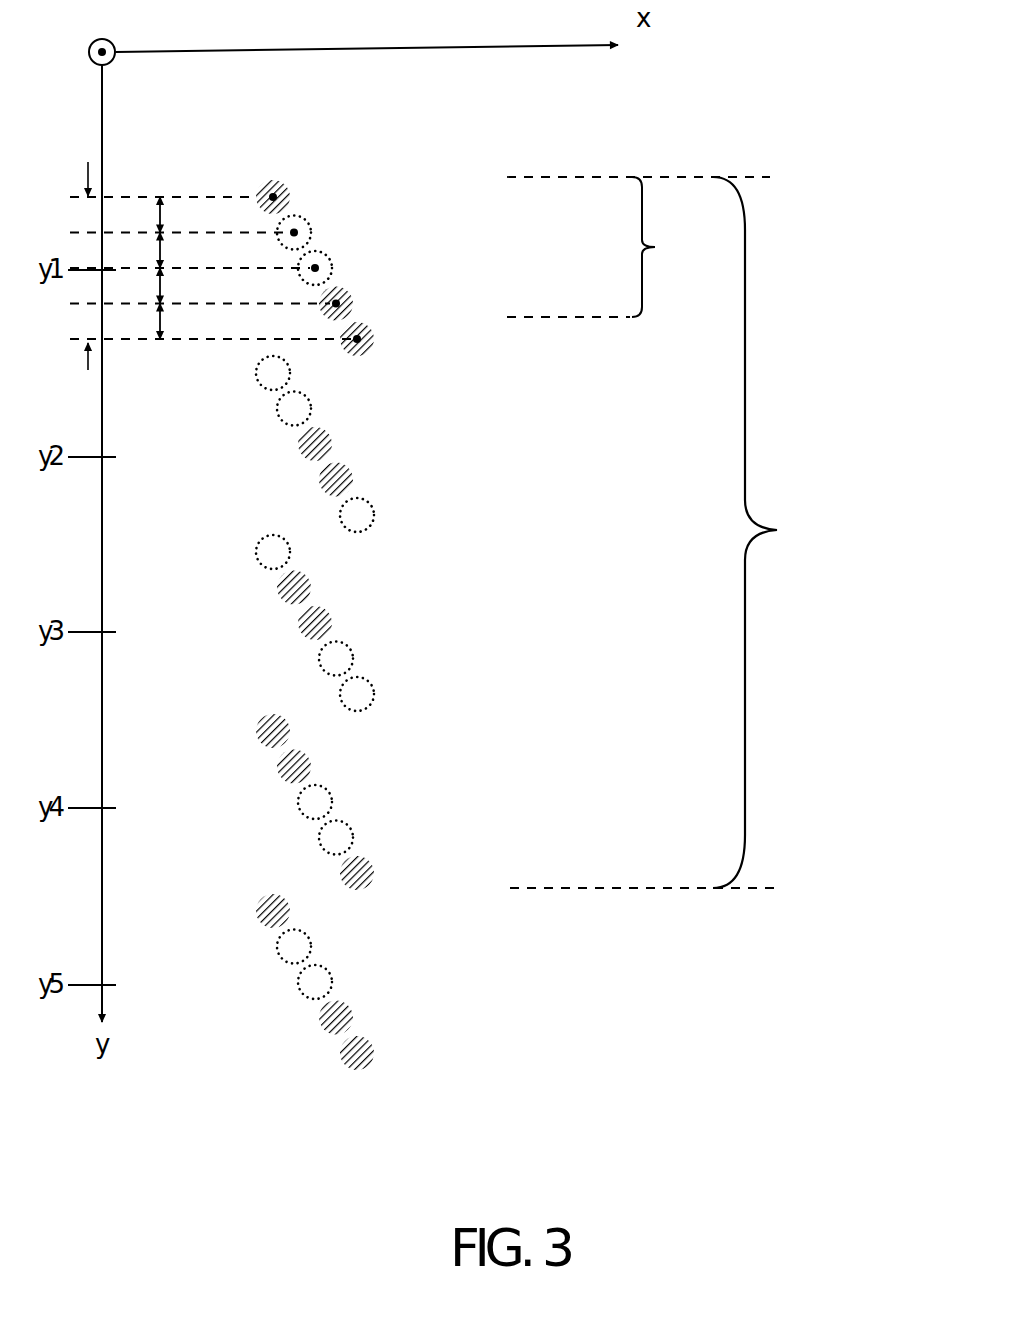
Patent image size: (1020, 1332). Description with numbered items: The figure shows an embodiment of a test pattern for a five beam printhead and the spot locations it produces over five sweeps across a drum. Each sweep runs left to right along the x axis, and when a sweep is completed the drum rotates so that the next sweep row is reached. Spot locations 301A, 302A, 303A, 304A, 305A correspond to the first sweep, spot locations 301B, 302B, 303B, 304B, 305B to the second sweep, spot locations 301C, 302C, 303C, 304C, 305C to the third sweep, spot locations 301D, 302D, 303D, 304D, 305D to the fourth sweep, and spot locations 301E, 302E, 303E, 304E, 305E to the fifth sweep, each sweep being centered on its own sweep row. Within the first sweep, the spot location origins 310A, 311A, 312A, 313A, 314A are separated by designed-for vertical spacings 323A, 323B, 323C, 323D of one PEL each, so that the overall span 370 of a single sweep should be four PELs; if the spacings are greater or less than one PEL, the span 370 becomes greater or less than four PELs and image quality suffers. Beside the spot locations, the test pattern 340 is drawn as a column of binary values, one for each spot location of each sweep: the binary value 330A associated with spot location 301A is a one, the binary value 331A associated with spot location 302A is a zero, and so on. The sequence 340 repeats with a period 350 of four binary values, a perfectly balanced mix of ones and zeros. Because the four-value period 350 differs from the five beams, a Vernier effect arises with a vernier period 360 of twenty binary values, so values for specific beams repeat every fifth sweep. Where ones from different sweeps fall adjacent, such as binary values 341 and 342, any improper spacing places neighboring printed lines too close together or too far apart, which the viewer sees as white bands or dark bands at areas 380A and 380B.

The spot location 301A is at (267, 184).
The spot location 302A is at (302, 210).
The spot location 303A is at (300, 232).
The spot location 304A is at (323, 270).
The spot location 305A is at (369, 328).
The spot location origin 310A is at (271, 186).
The spot location origin 311A is at (306, 218).
The spot location origin 312A is at (320, 254).
The spot location origin 313A is at (343, 304).
The spot location origin 314A is at (367, 340).
The spot location 301B is at (268, 390).
The spot location 302B is at (308, 400).
The spot location 303B is at (332, 430).
The spot location 304B is at (350, 465).
The spot location 305B is at (372, 502).
The spot location 301C is at (268, 569).
The spot location 302C is at (308, 579).
The spot location 303C is at (332, 609).
The spot location 304C is at (350, 644).
The spot location 305C is at (372, 681).
The spot location 301D is at (268, 748).
The spot location 302D is at (308, 758).
The spot location 303D is at (332, 788).
The spot location 304D is at (350, 823).
The spot location 305D is at (372, 860).
The spot location 301E is at (268, 928).
The spot location 302E is at (308, 938).
The spot location 303E is at (332, 968).
The spot location 304E is at (350, 1003).
The spot location 305E is at (372, 1040).
The vertical spacing 323A is at (164, 217).
The vertical spacing 323B is at (164, 252).
The vertical spacing 323C is at (164, 288).
The vertical spacing 323D is at (164, 323).
The overall span 370 is at (84, 249).
The test pattern 340 is at (516, 160).
The binary value 330A is at (531, 195).
The binary value 331A is at (531, 231).
The binary value 341 is at (534, 873).
The binary value 342 is at (534, 910).
The period 350 is at (605, 247).
The vernier period 360 is at (770, 532).
The area 380A is at (781, 177).
The area 380B is at (783, 888).